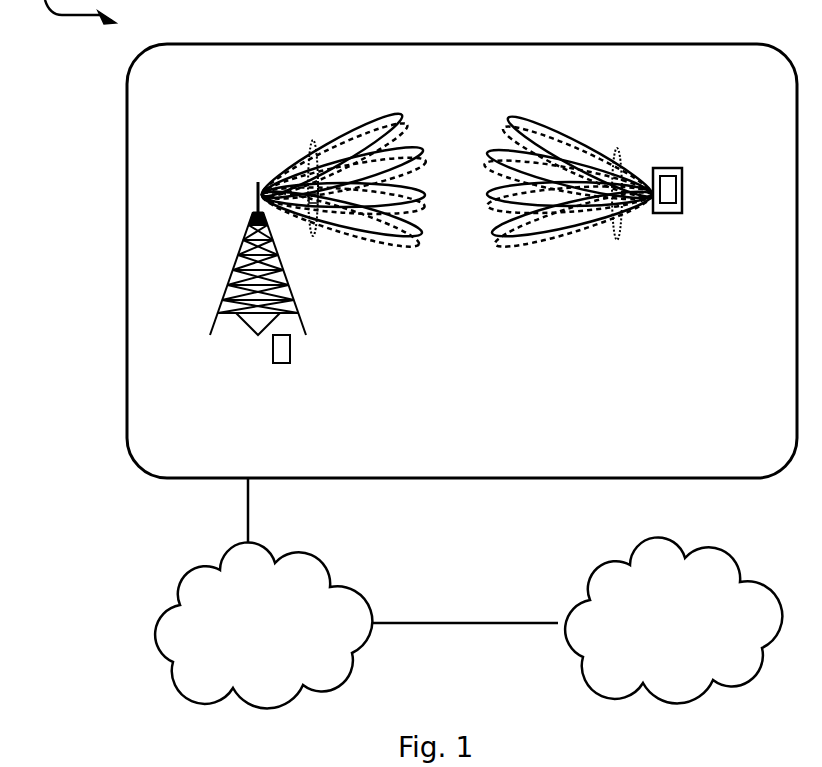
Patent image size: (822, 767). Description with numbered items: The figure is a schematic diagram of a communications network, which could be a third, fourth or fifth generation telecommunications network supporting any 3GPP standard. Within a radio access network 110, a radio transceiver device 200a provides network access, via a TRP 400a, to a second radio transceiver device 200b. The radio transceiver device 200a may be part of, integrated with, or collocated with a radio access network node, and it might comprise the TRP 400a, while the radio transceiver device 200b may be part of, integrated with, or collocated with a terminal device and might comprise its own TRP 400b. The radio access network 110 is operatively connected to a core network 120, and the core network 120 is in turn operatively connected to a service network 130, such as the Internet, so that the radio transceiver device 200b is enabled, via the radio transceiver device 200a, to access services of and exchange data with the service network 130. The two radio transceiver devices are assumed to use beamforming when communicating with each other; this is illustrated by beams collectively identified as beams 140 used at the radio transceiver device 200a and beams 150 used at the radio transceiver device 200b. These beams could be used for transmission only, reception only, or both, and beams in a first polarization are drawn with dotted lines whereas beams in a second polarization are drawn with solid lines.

The radio access network 110 is at (127, 383).
The core network 120 is at (288, 644).
The service network 130 is at (698, 641).
The beams 140 is at (313, 140).
The beams 150 is at (617, 150).
The radio transceiver device 200a is at (273, 351).
The radio transceiver device 200b is at (705, 212).
The TRP 400a is at (257, 198).
The TRP 400b is at (677, 188).